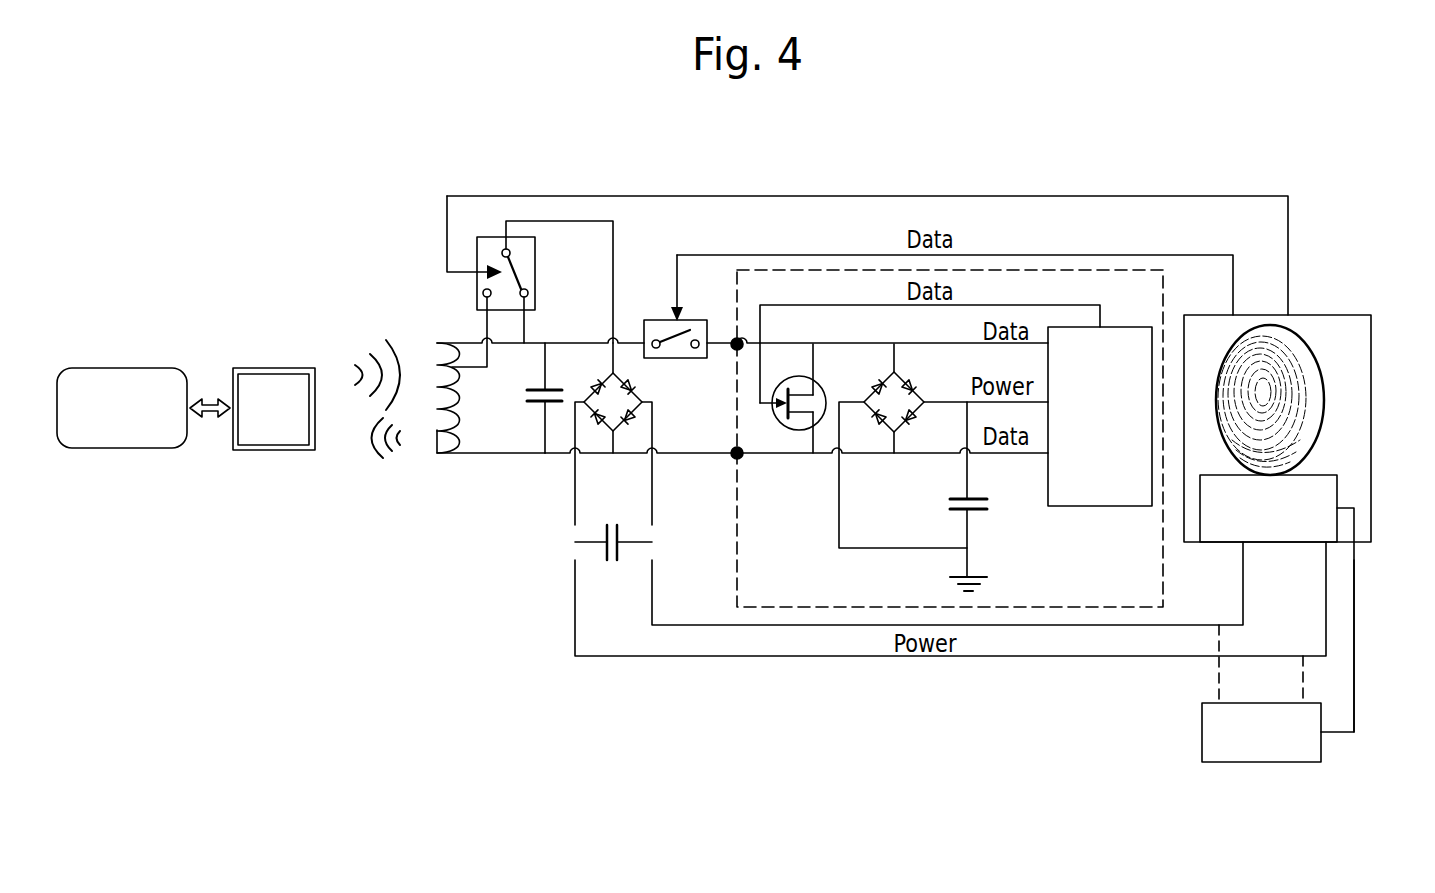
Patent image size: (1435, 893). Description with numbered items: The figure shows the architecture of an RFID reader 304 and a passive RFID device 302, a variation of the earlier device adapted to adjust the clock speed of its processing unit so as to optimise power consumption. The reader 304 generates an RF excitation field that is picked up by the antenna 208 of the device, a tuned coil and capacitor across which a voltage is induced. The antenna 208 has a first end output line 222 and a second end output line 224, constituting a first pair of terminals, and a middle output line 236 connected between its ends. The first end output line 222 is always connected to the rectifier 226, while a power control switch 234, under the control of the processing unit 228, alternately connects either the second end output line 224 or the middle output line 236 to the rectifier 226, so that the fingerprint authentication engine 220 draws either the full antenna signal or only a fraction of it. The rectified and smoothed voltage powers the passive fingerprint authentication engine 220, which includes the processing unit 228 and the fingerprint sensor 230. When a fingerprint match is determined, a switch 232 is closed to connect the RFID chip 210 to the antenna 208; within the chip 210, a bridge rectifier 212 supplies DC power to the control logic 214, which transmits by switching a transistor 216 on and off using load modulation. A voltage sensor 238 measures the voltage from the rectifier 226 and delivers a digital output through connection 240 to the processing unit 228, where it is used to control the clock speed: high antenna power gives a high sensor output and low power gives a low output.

The antenna 208 is at (437, 455).
The RFID chip 210 is at (778, 268).
The bridge rectifier 212 is at (902, 440).
The control logic 214 is at (1097, 488).
The transistor 216 is at (792, 430).
The fingerprint authentication engine 220 is at (1325, 313).
The first end output line 222 is at (502, 458).
The second end output line 224 is at (472, 342).
The rectifier 226 is at (633, 390).
The processing unit 228 is at (1322, 493).
The fingerprint sensor 230 is at (1313, 362).
The switch 232 is at (658, 325).
The power control switch 234 is at (488, 242).
The middle output line 236 is at (458, 366).
The voltage sensor 238 is at (1225, 732).
The connection 240 is at (1355, 695).
The passive RFID device 302 is at (1098, 160).
The RFID reader 304 is at (189, 295).